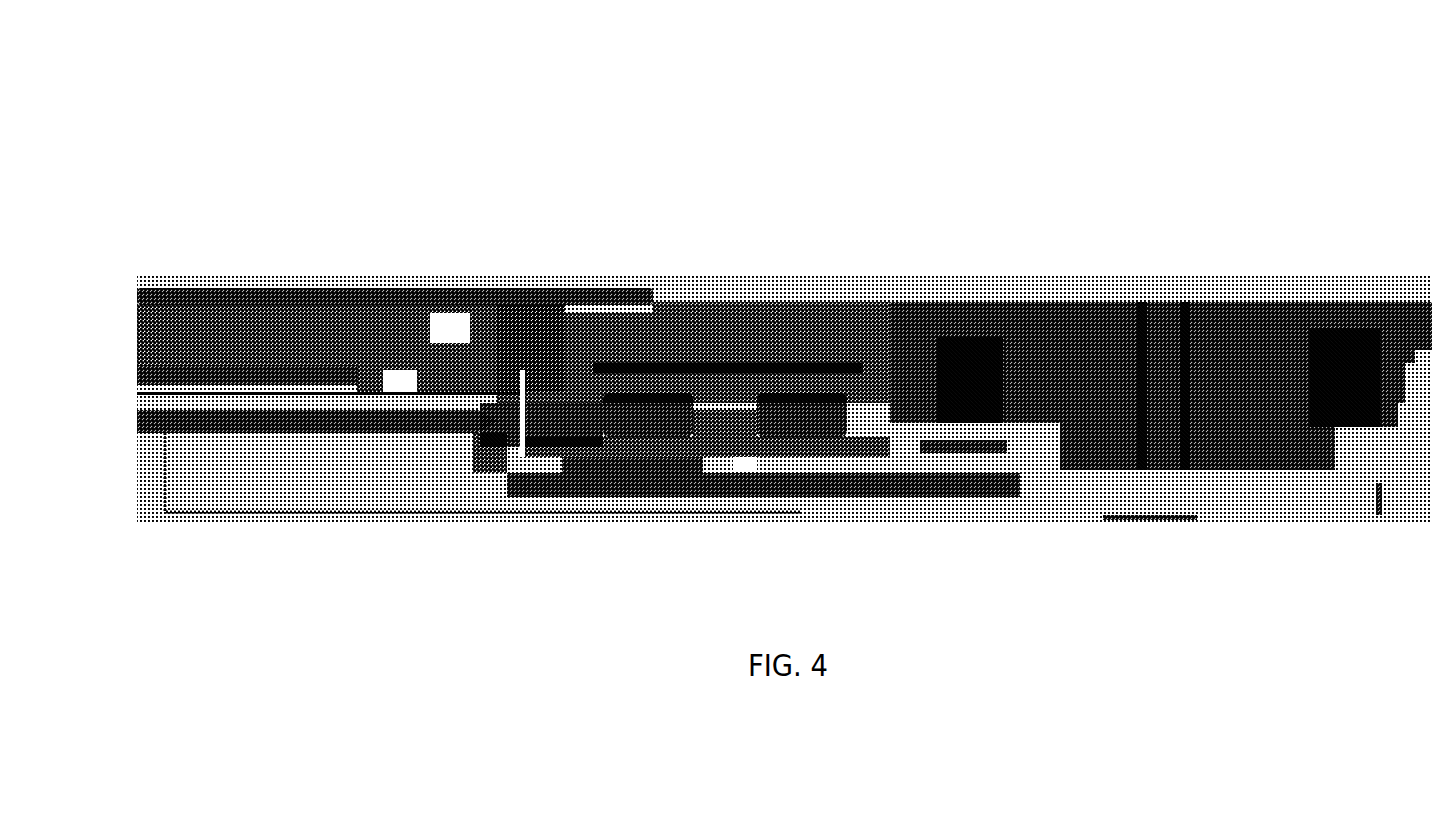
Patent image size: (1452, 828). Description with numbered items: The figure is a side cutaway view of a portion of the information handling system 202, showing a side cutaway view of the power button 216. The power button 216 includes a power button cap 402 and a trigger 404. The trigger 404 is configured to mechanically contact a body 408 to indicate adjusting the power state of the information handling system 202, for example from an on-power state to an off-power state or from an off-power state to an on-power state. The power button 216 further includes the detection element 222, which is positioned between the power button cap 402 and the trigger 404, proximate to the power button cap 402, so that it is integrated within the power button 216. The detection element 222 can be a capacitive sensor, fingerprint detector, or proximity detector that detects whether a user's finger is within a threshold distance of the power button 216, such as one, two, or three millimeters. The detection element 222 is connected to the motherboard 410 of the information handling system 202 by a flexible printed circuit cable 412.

The information handling system 202 is at (258, 100).
The power button 216 is at (615, 248).
The detection element 222 is at (818, 364).
The power button cap 402 is at (872, 300).
The trigger 404 is at (729, 382).
The body 408 is at (701, 400).
The motherboard 410 is at (918, 516).
The flexible printed circuit cable 412 is at (292, 528).